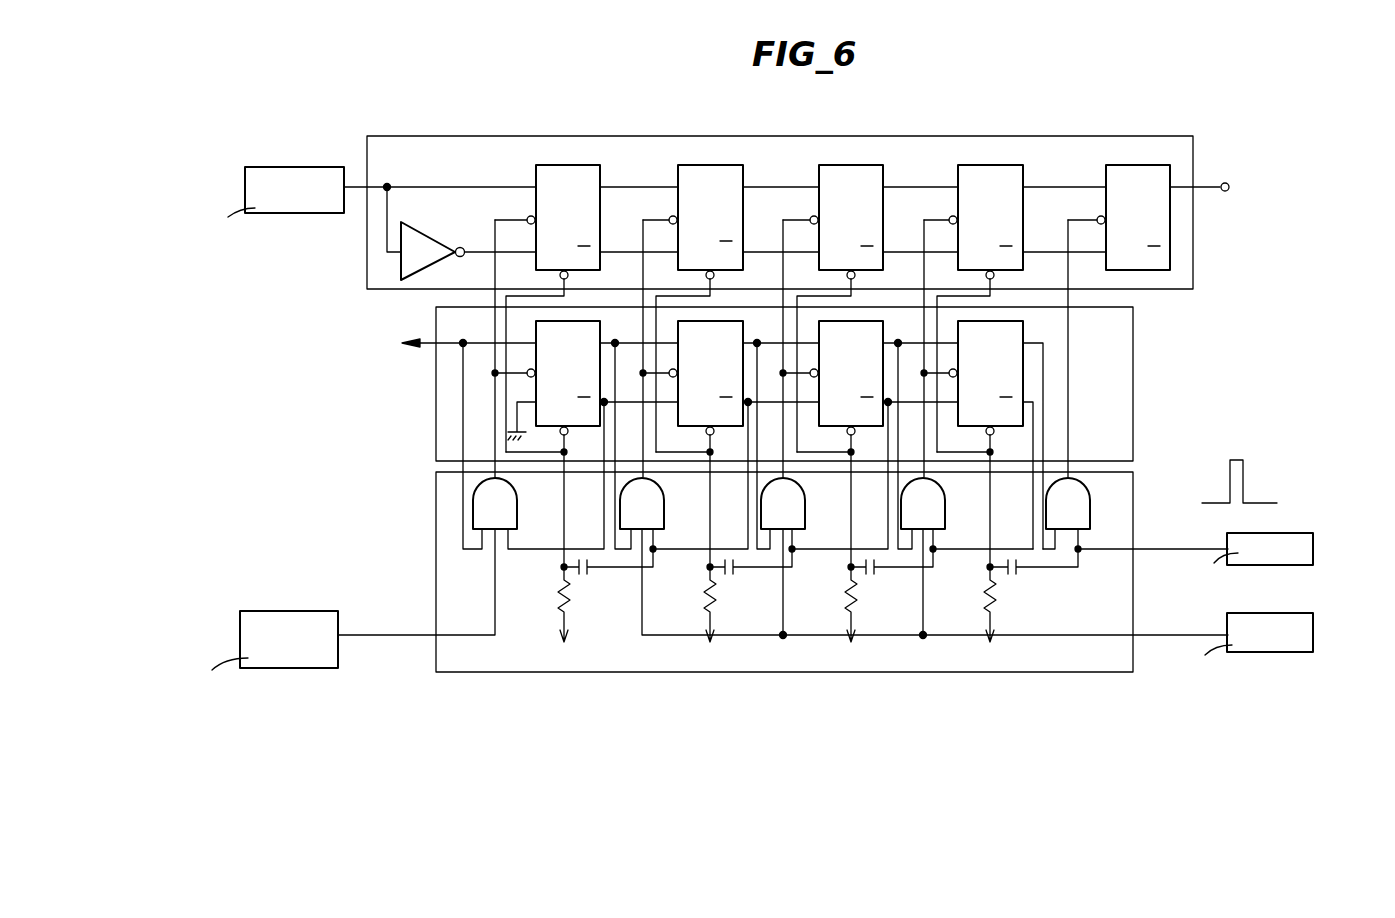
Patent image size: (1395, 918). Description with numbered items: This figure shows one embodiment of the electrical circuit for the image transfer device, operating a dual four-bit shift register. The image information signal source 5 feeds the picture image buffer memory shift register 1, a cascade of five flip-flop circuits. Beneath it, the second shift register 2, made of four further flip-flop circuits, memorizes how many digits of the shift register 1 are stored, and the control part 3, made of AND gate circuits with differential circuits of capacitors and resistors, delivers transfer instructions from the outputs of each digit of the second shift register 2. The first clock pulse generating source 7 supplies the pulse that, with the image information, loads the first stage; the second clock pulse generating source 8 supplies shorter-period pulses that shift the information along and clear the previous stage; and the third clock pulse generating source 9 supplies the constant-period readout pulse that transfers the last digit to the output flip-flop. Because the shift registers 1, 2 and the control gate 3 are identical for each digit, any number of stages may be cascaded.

The picture image buffer memory shift register 1 is at (793, 136).
The second shift register 2 is at (1133, 353).
The control part 3 is at (1133, 472).
The image information signal source 5 is at (320, 172).
The first clock pulse generating source 7 is at (318, 620).
The second clock pulse generating source 8 is at (1227, 622).
The third clock pulse generating source 9 is at (1226, 542).